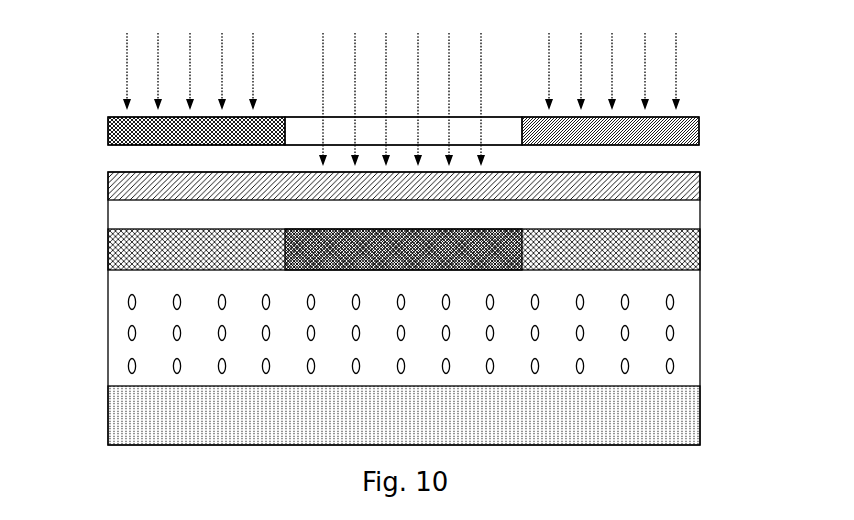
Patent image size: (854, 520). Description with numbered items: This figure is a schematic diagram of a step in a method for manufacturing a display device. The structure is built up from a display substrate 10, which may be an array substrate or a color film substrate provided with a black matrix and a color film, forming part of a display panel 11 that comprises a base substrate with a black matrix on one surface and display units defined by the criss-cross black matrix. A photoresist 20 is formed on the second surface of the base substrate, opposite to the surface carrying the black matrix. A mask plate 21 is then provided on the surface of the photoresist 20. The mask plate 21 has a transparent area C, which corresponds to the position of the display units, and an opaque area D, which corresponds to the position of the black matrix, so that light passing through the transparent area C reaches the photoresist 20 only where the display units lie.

The array substrate 10 is at (670, 413).
The display panel 11 is at (675, 257).
The photoresist 20 is at (125, 180).
The mask plate 21 is at (125, 130).
The transparent area C is at (492, 128).
The opaque area D is at (690, 131).